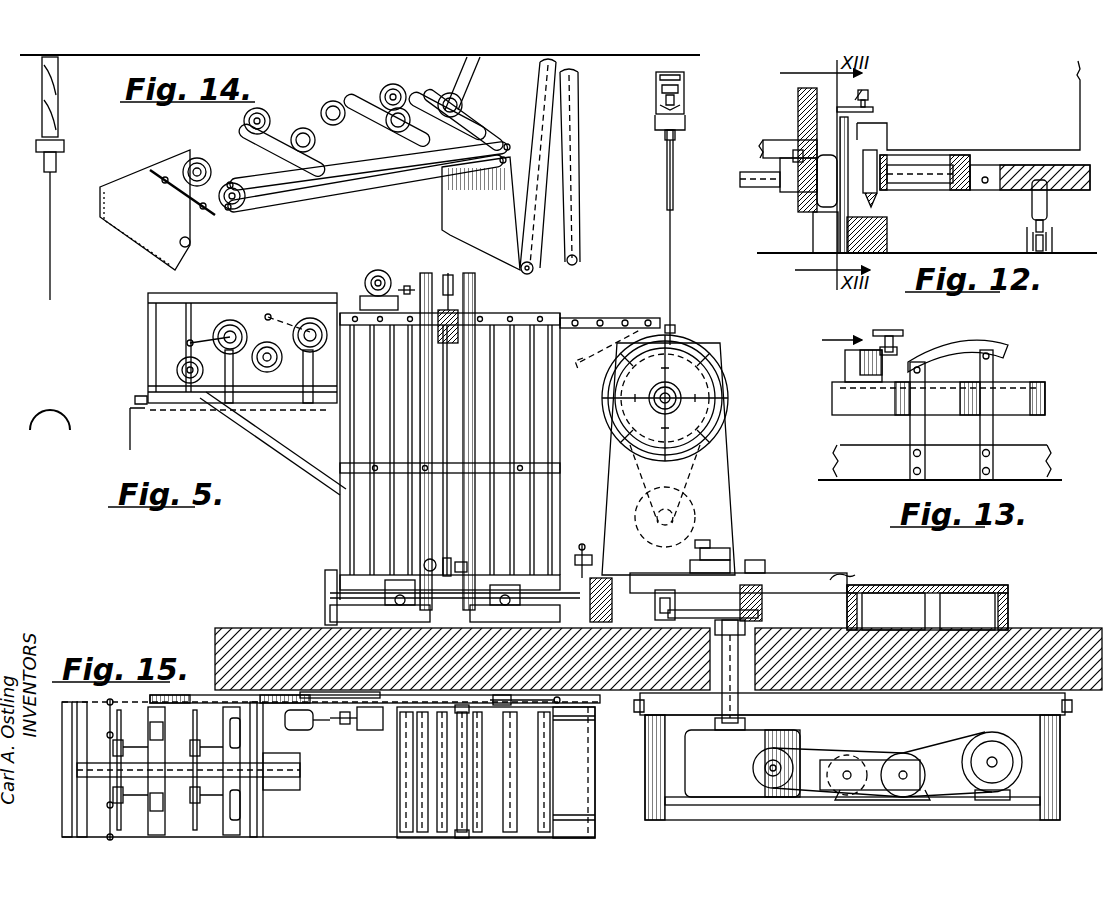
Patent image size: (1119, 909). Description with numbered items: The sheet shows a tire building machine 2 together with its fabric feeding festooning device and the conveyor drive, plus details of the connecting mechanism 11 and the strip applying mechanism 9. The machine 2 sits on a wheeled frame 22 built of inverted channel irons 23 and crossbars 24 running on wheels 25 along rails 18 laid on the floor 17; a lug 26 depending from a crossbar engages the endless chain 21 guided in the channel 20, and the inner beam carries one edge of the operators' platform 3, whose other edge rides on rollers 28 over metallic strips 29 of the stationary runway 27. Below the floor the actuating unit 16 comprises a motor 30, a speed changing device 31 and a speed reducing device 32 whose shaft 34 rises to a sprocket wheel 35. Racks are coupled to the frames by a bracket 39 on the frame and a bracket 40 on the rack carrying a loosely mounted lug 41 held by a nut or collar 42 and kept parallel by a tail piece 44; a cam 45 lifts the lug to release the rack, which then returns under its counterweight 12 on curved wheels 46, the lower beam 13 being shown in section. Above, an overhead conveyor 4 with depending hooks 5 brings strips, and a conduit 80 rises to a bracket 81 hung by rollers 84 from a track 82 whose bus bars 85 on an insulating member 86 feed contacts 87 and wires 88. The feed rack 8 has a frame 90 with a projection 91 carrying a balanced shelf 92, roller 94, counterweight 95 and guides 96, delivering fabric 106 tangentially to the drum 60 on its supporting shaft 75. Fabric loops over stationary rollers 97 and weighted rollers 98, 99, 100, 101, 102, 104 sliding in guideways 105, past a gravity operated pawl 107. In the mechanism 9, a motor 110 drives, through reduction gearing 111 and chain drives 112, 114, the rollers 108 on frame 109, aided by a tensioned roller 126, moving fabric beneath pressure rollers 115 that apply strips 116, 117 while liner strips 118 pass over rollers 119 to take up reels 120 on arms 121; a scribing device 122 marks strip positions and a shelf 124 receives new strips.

In FIG. 12, the tire building machine 2 is at (975, 102).
In FIG. 5, the operators' platform 3 is at (780, 578).
In FIG. 5, the second conveyor 4 is at (60, 135).
In FIG. 5, the depending hook 5 is at (50, 404).
In FIG. 5, the feed rack 8 is at (373, 447).
In FIG. 15, the feed rack 8 is at (331, 770).
In FIG. 14, the strip applying mechanism 9 is at (340, 195).
In FIG. 5, the strip applying mechanism 9 is at (205, 395).
In FIG. 15, the strip applying mechanism 9 is at (100, 800).
In FIG. 12, the connecting mechanism 11 is at (830, 138).
In FIG. 13, the connecting mechanism 11 is at (895, 432).
In FIG. 5, the counterweight 12 is at (458, 310).
In FIG. 13, the lower beam 13 is at (942, 461).
In FIG. 5, the actuating unit 16 is at (1026, 790).
In FIG. 5, the floor 17 is at (1045, 690).
In FIG. 12, the rail 18 is at (876, 205).
In FIG. 5, the rail 18 is at (793, 606).
In FIG. 12, the channel 20 is at (1052, 246).
In FIG. 5, the channel 20 is at (665, 610).
In FIG. 12, the endless chain 21 is at (1030, 240).
In FIG. 12, the frame 22 is at (1075, 178).
In FIG. 5, the frame 22 is at (738, 584).
In FIG. 12, the inverted channel iron 23 is at (952, 192).
In FIG. 12, the crossbar 24 is at (1062, 190).
In FIG. 12, the wheel 25 is at (872, 196).
In FIG. 12, the lug 26 is at (1047, 222).
In FIG. 5, the stationary runway 27 is at (955, 580).
In FIG. 5, the roller 28 is at (841, 565).
In FIG. 5, the metallic strip 29 is at (842, 593).
In FIG. 5, the motor 30 is at (1020, 760).
In FIG. 5, the speed changing device 31 is at (885, 765).
In FIG. 5, the speed reducing device 32 is at (770, 735).
In FIG. 5, the shaft 34 is at (738, 705).
In FIG. 5, the sprocket wheel 35 is at (755, 578).
In FIG. 12, the arm or bracket 39 is at (880, 130).
In FIG. 13, the arm or bracket 39 is at (845, 362).
In FIG. 12, the arm or bracket 40 is at (800, 100).
In FIG. 12, the lug 41 is at (870, 104).
In FIG. 12, the nut or collar 42 is at (868, 92).
In FIG. 13, the nut or collar 42 is at (896, 330).
In FIG. 12, the tail piece 44 is at (856, 88).
In FIG. 13, the tail piece 44 is at (888, 330).
In FIG. 13, the cam 45 is at (955, 346).
In FIG. 5, the curved wheel 46 is at (590, 549).
In FIG. 5, the drum 60 is at (690, 345).
In FIG. 5, the supporting shaft 75 is at (668, 395).
In FIG. 5, the conduit 80 is at (675, 192).
In FIG. 5, the bracket 81 is at (686, 130).
In FIG. 5, the track 82 is at (660, 78).
In FIG. 5, the roller 84 is at (684, 78).
In FIG. 5, the electrical bus bar 85 is at (676, 100).
In FIG. 5, the spring 86 is at (680, 90).
In FIG. 5, the contact 87 is at (662, 108).
In FIG. 5, the wire 88 is at (665, 136).
In FIG. 5, the frame 90 is at (548, 430).
In FIG. 5, the projection 91 is at (605, 320).
In FIG. 5, the balanced shelf 92 is at (660, 318).
In FIG. 15, the balanced shelf 92 is at (580, 757).
In FIG. 5, the roller 94 is at (672, 325).
In FIG. 5, the counterweight 95 is at (607, 349).
In FIG. 15, the counterweight 95 is at (500, 710).
In FIG. 15, the guide 96 is at (570, 718).
In FIG. 14, the stationary roller 97 is at (556, 72).
In FIG. 5, the stationary roller 97 is at (540, 318).
In FIG. 15, the stationary roller 97 is at (400, 783).
In FIG. 14, the roller 98 is at (528, 273).
In FIG. 5, the roller 98 is at (365, 565).
In FIG. 14, the roller 99 is at (574, 263).
In FIG. 5, the roller 99 is at (398, 568).
In FIG. 5, the roller 100 is at (436, 562).
In FIG. 5, the roller 101 is at (458, 566).
In FIG. 5, the roller 102 is at (505, 568).
In FIG. 5, the roller 104 is at (540, 565).
In FIG. 5, the guideway 105 is at (400, 518).
In FIG. 15, the guideway 105 is at (392, 826).
In FIG. 14, the fabric 106 is at (470, 232).
In FIG. 5, the fabric 106 is at (128, 438).
In FIG. 5, the gravity operated pawl 107 is at (570, 318).
In FIG. 15, the gravity operated pawl 107 is at (465, 815).
In FIG. 5, the roller 108 is at (226, 405).
In FIG. 5, the frame 109 is at (148, 325).
In FIG. 15, the motor 110 is at (368, 730).
In FIG. 5, the reduction gearing 111 is at (388, 278).
In FIG. 15, the reduction gearing 111 is at (292, 730).
In FIG. 15, the chain drive 112 is at (340, 685).
In FIG. 5, the chain drive 114 is at (276, 408).
In FIG. 15, the chain drive 114 is at (205, 696).
In FIG. 5, the pressure roller 115 is at (269, 376).
In FIG. 14, the fabric strip 116 is at (190, 160).
In FIG. 5, the fabric strip 116 is at (177, 370).
In FIG. 14, the fabric strip 117 is at (480, 160).
In FIG. 5, the fabric strip 117 is at (281, 368).
In FIG. 14, the liner strip 118 is at (300, 135).
In FIG. 14, the roller 119 is at (290, 163).
In FIG. 14, the take up reel 120 is at (262, 113).
In FIG. 5, the take up reel 120 is at (271, 327).
In FIG. 5, the arm 121 is at (200, 330).
In FIG. 14, the scribing device 122 is at (185, 198).
In FIG. 5, the scribing device 122 is at (148, 386).
In FIG. 15, the scribing device 122 is at (112, 700).
In FIG. 5, the shelf 124 is at (140, 403).
In FIG. 15, the shelf 124 is at (70, 738).
In FIG. 14, the roller 126 is at (465, 110).